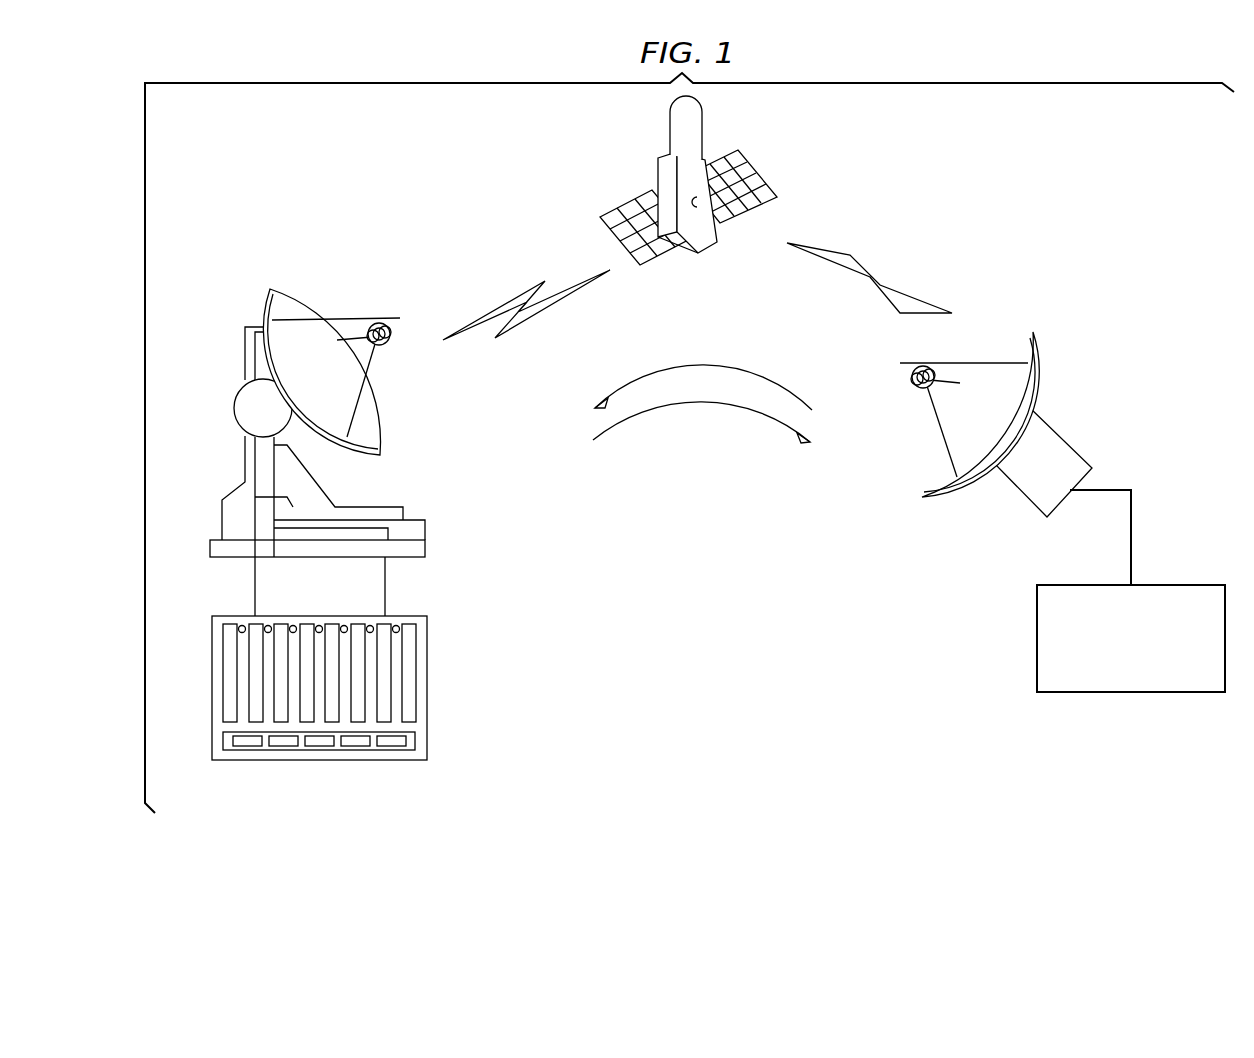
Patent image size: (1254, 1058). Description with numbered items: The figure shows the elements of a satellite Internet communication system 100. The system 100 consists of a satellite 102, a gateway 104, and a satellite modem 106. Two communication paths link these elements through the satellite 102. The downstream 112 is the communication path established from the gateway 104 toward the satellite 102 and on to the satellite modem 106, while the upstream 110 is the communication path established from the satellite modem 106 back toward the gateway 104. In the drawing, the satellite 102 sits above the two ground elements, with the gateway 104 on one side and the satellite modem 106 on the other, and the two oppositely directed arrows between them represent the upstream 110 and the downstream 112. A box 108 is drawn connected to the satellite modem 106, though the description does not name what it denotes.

The satellite Internet communication system 100 is at (1071, 148).
The satellite 102 is at (703, 130).
The gateway 104 is at (198, 343).
The satellite modem 106 is at (1146, 388).
The receiver equipment 108 is at (1197, 584).
The upstream 110 is at (755, 373).
The downstream 112 is at (638, 415).